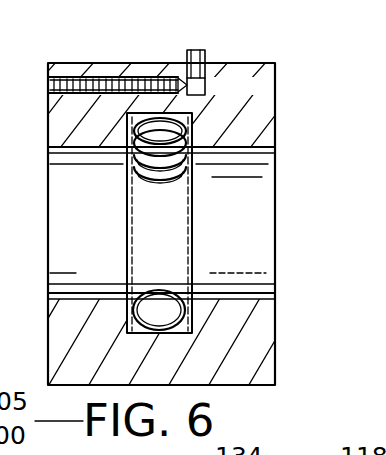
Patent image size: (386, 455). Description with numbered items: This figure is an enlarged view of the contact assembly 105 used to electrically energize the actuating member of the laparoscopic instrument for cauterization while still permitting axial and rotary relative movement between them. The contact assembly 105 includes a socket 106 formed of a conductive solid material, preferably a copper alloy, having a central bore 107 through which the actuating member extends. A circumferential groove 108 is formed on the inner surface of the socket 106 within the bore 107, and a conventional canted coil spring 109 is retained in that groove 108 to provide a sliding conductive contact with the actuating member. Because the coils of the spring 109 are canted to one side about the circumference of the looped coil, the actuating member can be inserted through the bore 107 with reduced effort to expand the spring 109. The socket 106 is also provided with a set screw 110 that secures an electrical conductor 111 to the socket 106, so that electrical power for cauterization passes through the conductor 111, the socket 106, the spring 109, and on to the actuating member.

The contact assembly 105 is at (282, 105).
The socket 106 is at (262, 322).
The central bore 107 is at (236, 298).
The circumferential groove 108 is at (134, 326).
The canted coil spring 109 is at (168, 178).
The set screw 110 is at (157, 80).
The electrical conductor 111 is at (208, 82).